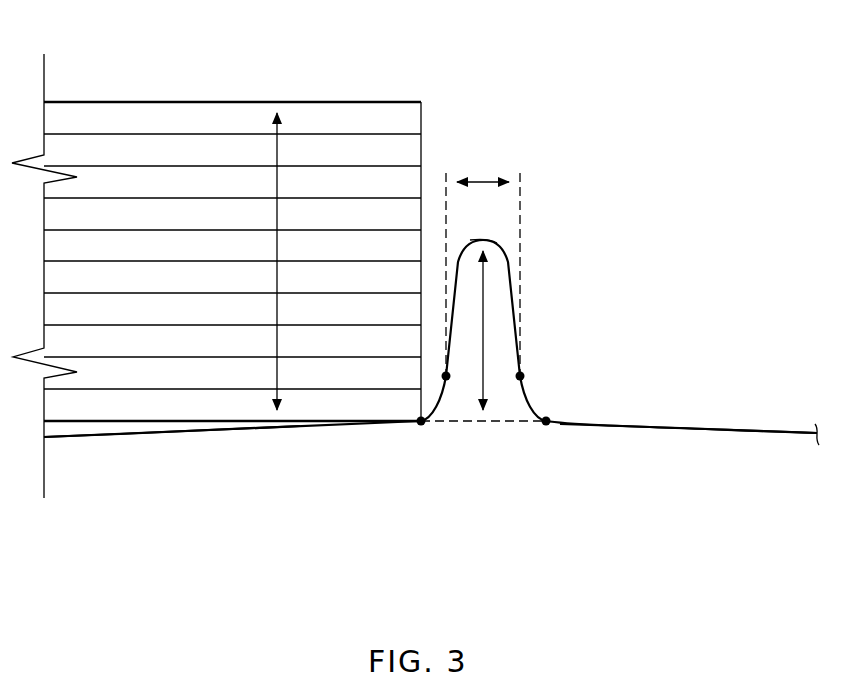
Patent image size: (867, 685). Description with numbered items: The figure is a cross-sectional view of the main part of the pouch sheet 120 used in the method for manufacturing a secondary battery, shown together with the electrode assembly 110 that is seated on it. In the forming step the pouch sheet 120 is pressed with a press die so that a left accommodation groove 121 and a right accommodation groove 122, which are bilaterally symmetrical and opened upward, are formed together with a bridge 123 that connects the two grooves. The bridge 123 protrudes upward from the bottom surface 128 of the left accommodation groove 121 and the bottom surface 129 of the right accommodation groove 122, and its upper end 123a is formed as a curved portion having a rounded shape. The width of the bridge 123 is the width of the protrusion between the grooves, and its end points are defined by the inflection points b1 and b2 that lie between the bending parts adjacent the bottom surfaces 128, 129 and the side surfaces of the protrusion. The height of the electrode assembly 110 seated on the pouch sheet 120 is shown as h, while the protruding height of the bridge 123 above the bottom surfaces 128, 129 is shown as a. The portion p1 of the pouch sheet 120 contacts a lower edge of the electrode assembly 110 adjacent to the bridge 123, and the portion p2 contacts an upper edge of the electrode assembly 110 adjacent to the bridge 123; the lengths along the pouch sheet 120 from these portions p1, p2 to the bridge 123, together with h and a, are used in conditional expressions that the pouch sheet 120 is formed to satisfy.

The electrode assembly 110 is at (389, 90).
The pouch sheet 120 is at (777, 398).
The left accommodation groove 121 is at (60, 430).
The right accommodation groove 122 is at (605, 384).
The bridge 123 is at (527, 272).
The upper end of the bridge 123a is at (497, 243).
The bottom surface of the left accommodation groove 128 is at (173, 437).
The bottom surface of the right accommodation groove 129 is at (723, 433).
The portion contacting lower edge of electrode assembly p1 is at (421, 424).
The portion contacting upper edge of electrode assembly p2 is at (546, 424).
The first inflection point b1 is at (446, 380).
The second inflection point b2 is at (520, 380).